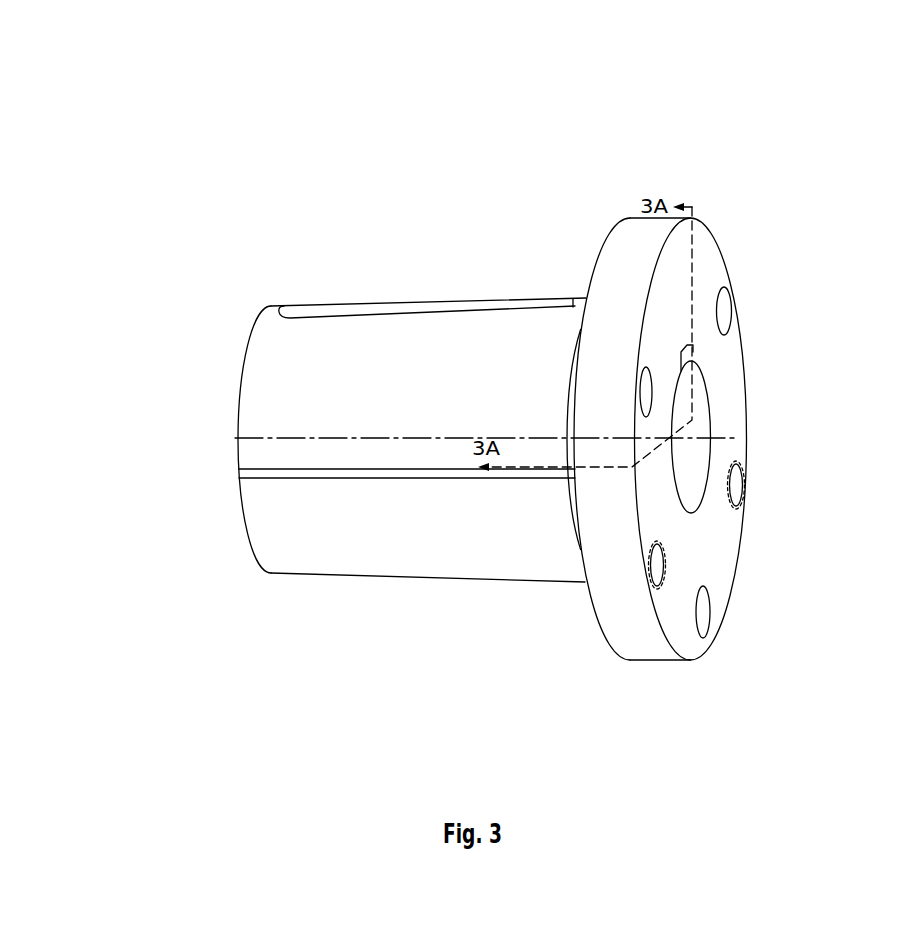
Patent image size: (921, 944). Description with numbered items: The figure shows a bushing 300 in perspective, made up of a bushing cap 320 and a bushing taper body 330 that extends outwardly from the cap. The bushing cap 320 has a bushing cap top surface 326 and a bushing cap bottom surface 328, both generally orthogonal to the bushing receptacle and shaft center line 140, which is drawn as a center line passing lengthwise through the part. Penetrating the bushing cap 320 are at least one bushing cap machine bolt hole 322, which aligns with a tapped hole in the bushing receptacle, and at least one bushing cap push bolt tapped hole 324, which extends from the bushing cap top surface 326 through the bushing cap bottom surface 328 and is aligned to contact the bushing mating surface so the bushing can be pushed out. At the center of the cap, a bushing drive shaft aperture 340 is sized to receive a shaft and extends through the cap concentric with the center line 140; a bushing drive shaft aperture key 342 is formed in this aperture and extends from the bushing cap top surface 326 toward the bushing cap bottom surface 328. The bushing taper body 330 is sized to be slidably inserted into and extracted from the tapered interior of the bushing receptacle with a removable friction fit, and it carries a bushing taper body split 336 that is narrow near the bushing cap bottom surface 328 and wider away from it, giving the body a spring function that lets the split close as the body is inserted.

The bushing 300 is at (687, 186).
The bushing cap 320 is at (708, 249).
The bushing cap bottom surface 328 is at (613, 235).
The bushing cap top surface 326 is at (681, 583).
The bushing cap machine bolt hole 322 is at (723, 313).
The bushing cap push bolt tapped hole 324 is at (736, 484).
The bushing drive shaft aperture 340 is at (693, 402).
The bushing drive shaft aperture key 342 is at (683, 355).
The bushing taper body 330 is at (337, 532).
The bushing taper body split 336 is at (345, 470).
The bushing receptacle and shaft center line 140 is at (693, 438).